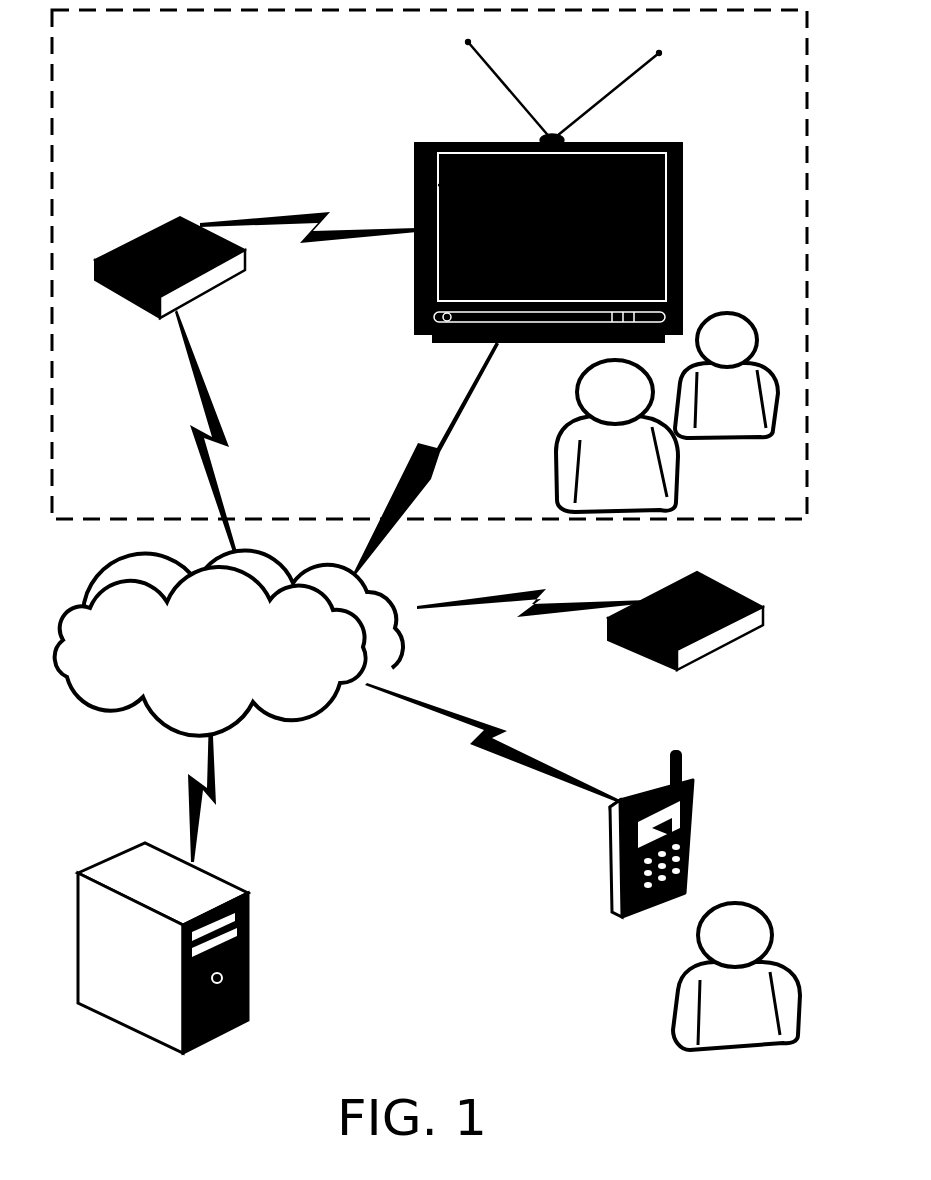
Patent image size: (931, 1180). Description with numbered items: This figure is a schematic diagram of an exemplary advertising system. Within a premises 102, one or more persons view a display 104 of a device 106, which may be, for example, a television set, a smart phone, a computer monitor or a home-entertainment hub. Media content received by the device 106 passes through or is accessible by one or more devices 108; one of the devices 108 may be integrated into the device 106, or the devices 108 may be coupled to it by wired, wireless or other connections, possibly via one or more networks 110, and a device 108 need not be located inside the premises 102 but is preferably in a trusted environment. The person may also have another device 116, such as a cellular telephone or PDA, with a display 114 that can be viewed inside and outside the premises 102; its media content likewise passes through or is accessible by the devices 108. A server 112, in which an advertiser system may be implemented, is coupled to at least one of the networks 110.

The premises 102 is at (808, 268).
The display 104 is at (414, 177).
The device 106 is at (683, 189).
The devices 108 is at (132, 240).
The networks 110 is at (127, 708).
The server 112 is at (250, 952).
The display 114 is at (688, 827).
The device 116 is at (690, 833).